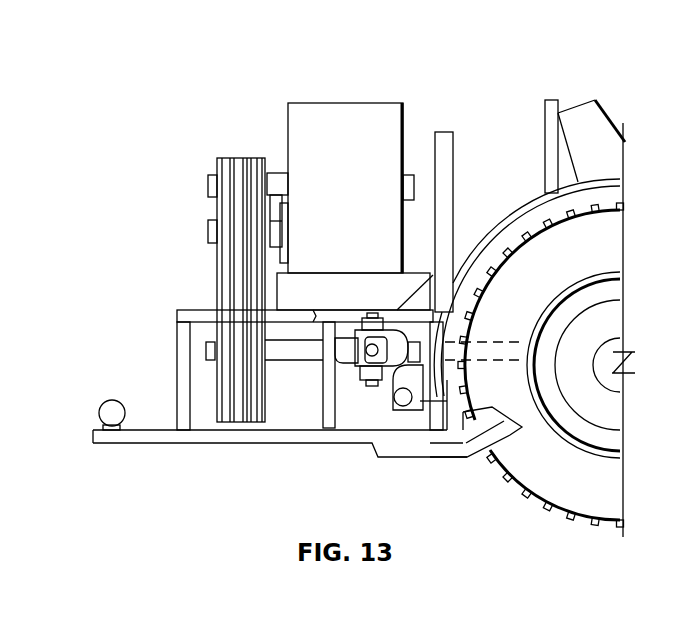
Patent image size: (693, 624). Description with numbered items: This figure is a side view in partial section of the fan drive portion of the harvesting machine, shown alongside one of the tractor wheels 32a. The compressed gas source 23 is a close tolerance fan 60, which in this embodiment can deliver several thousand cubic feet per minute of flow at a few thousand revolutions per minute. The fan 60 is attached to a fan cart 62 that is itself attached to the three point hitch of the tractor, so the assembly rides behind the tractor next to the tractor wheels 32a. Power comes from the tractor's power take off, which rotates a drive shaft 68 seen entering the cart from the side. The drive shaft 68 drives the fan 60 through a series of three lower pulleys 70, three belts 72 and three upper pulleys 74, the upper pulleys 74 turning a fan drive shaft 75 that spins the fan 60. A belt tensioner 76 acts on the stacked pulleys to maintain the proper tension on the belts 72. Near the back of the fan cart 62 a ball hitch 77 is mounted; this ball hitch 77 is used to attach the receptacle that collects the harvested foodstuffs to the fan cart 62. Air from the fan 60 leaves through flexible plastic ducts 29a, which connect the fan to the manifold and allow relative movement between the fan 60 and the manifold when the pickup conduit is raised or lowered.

The compressed gas source 23 is at (388, 97).
The fan 60 is at (357, 117).
The upper pulleys 74 is at (215, 158).
The fan drive shaft 75 is at (280, 173).
The belt tensioner 76 is at (207, 232).
The belts 72 is at (220, 272).
The lower pulleys 70 is at (213, 410).
The fan cart 62 is at (235, 443).
The drive shaft 68 is at (307, 353).
The flexible plastic ducts 29a is at (420, 400).
The ball hitch 77 is at (105, 402).
The tractor wheels 32a is at (608, 500).